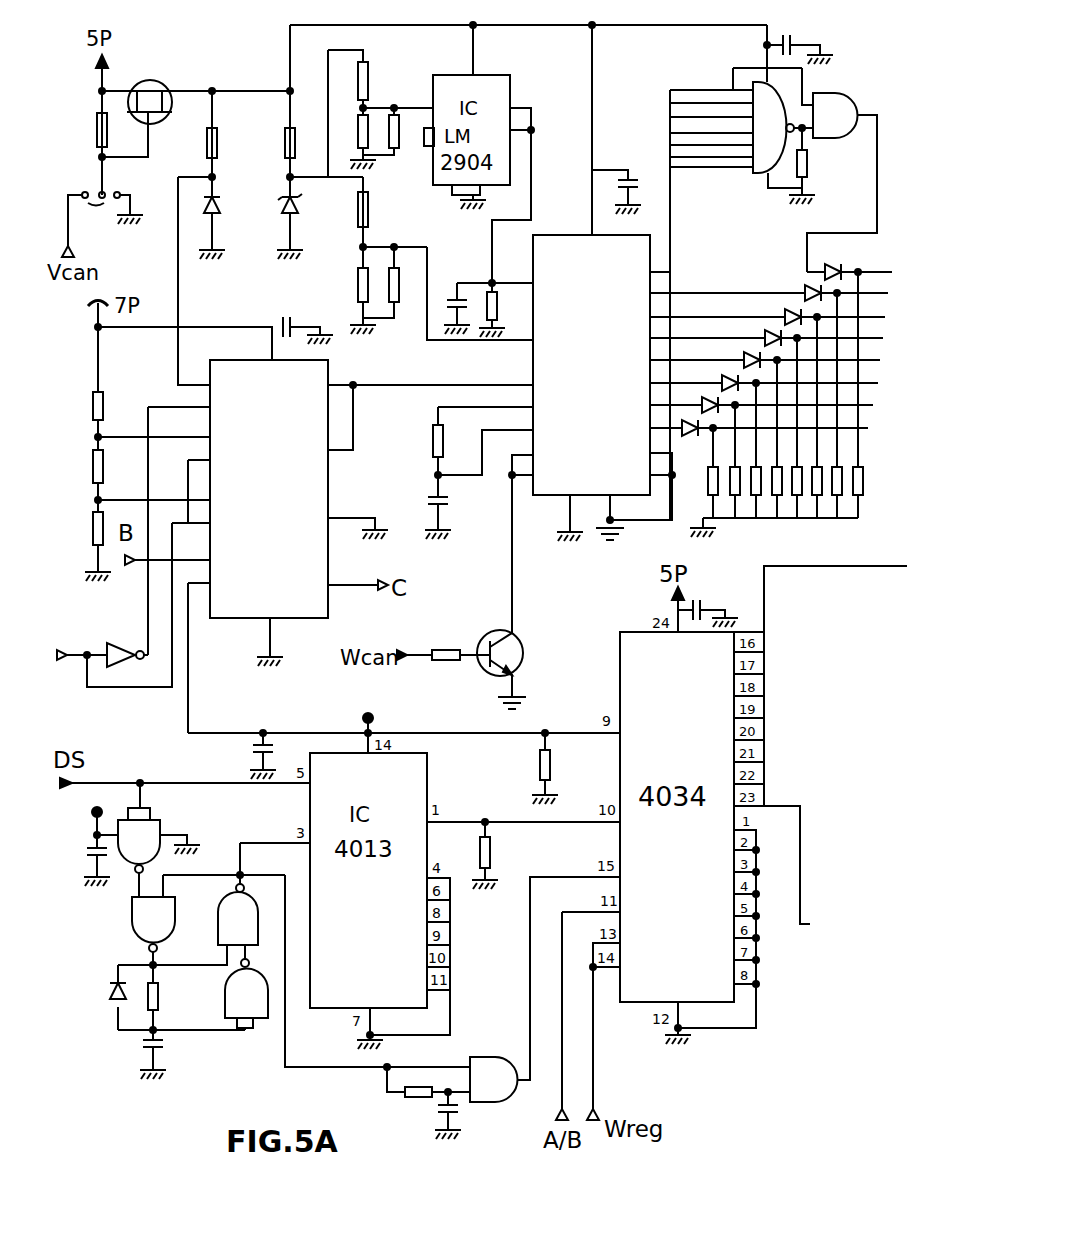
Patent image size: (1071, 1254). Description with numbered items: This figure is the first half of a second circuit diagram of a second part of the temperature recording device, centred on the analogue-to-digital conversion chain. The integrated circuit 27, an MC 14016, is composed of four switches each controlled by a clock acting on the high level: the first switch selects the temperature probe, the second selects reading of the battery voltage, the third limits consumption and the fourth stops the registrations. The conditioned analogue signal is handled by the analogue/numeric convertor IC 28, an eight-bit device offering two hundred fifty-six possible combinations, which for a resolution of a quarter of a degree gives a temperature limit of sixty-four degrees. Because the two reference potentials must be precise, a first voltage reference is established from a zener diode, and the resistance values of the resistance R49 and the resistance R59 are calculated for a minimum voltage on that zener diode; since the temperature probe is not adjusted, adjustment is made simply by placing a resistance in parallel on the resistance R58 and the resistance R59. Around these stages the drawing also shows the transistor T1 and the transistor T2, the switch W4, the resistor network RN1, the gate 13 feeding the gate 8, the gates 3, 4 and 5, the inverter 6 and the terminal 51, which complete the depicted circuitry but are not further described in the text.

The integrated circuit 27 is at (268, 488).
The IC 28 is at (591, 367).
The multi-input gate 13 is at (732, 127).
The AND gate 8 is at (835, 115).
The NAND gates 3 is at (188, 880).
The NAND gate 4 is at (246, 994).
The AND gate 5 is at (494, 1079).
The inverter 6 is at (96, 639).
The terminal 51 is at (105, 834).
The transistor T1 is at (150, 76).
The transistor T2 is at (482, 592).
The resistance R49 is at (385, 75).
The resistance R58 is at (368, 255).
The resistance R59 is at (362, 122).
The resistor network RN1 is at (776, 412).
The switch W4 is at (105, 220).